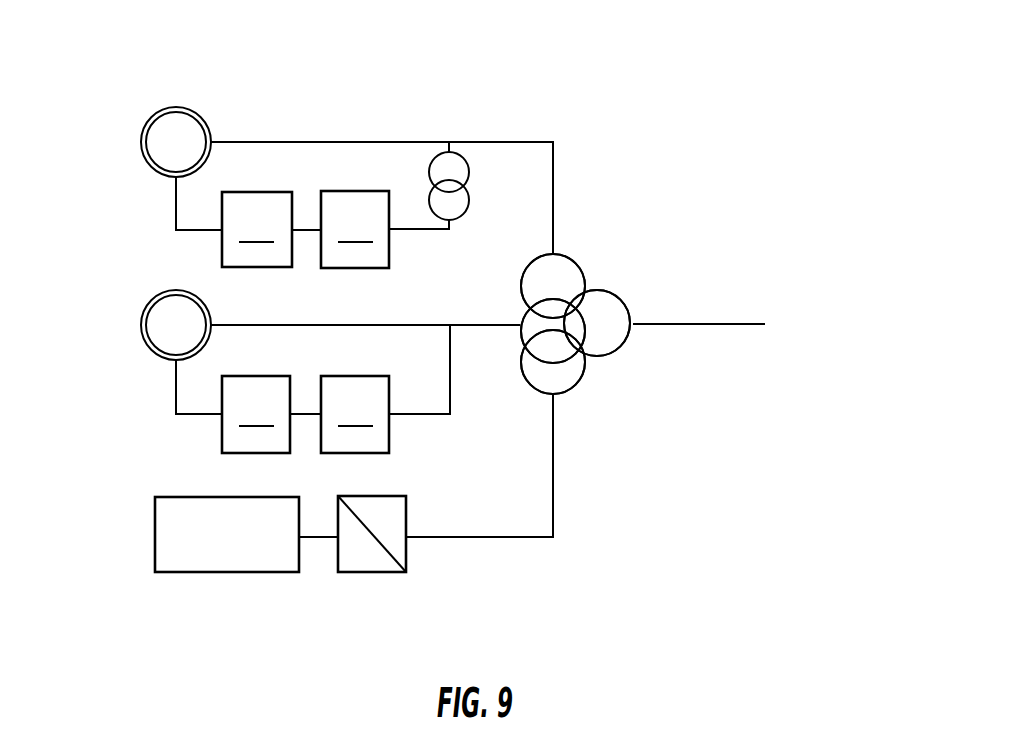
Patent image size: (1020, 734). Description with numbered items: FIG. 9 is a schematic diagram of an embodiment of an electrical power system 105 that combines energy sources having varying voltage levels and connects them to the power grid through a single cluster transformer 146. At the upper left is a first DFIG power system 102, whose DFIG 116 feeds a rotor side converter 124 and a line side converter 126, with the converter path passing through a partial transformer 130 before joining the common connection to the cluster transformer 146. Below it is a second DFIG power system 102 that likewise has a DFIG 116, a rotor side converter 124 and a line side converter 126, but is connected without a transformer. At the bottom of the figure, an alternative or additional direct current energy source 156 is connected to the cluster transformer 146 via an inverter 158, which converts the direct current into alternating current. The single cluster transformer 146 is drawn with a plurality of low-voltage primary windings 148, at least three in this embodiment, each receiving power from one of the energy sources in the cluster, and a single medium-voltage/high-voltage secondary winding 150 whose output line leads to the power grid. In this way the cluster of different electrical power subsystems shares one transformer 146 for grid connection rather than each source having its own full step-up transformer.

The DFIG power system 102 is at (168, 208).
The electrical power system 105 is at (648, 80).
The DFIG 116 is at (153, 110).
The rotor side converter 124 is at (257, 322).
The line side converter 126 is at (355, 322).
The partial transformer 130 is at (481, 179).
The single cluster transformer 146 is at (608, 376).
The low-voltage primary windings 148 is at (520, 355).
The medium-voltage/high-voltage secondary winding 150 is at (613, 292).
The direct current energy source 156 is at (150, 531).
The inverter 158 is at (366, 578).